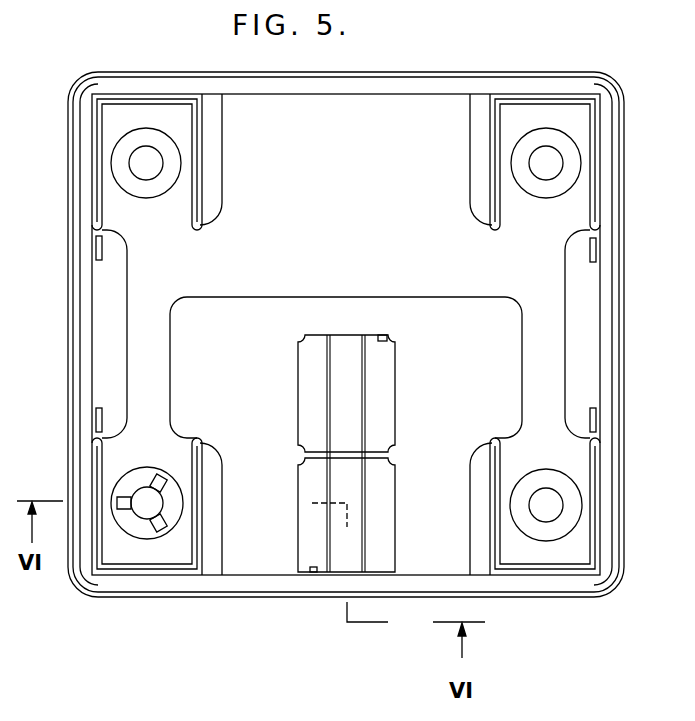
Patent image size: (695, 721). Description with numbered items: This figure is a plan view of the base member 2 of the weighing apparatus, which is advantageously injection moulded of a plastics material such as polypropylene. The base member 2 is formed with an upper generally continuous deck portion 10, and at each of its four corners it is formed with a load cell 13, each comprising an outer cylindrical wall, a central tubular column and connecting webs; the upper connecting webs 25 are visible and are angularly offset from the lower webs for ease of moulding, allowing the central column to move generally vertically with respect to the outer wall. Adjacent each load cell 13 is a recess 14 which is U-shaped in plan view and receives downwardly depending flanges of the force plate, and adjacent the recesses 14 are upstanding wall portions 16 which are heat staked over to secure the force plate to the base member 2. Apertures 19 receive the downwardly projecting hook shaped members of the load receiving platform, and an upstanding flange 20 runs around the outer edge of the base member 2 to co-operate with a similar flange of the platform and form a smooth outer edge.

The base member 2 is at (391, 51).
The deck portion 10 is at (443, 122).
The load cell 13 is at (148, 138).
The recess 14 is at (598, 185).
The upstanding wall portion 16 is at (605, 197).
The aperture 19 is at (597, 252).
The upstanding flange 20 is at (567, 597).
The upper connecting web 25 is at (160, 478).